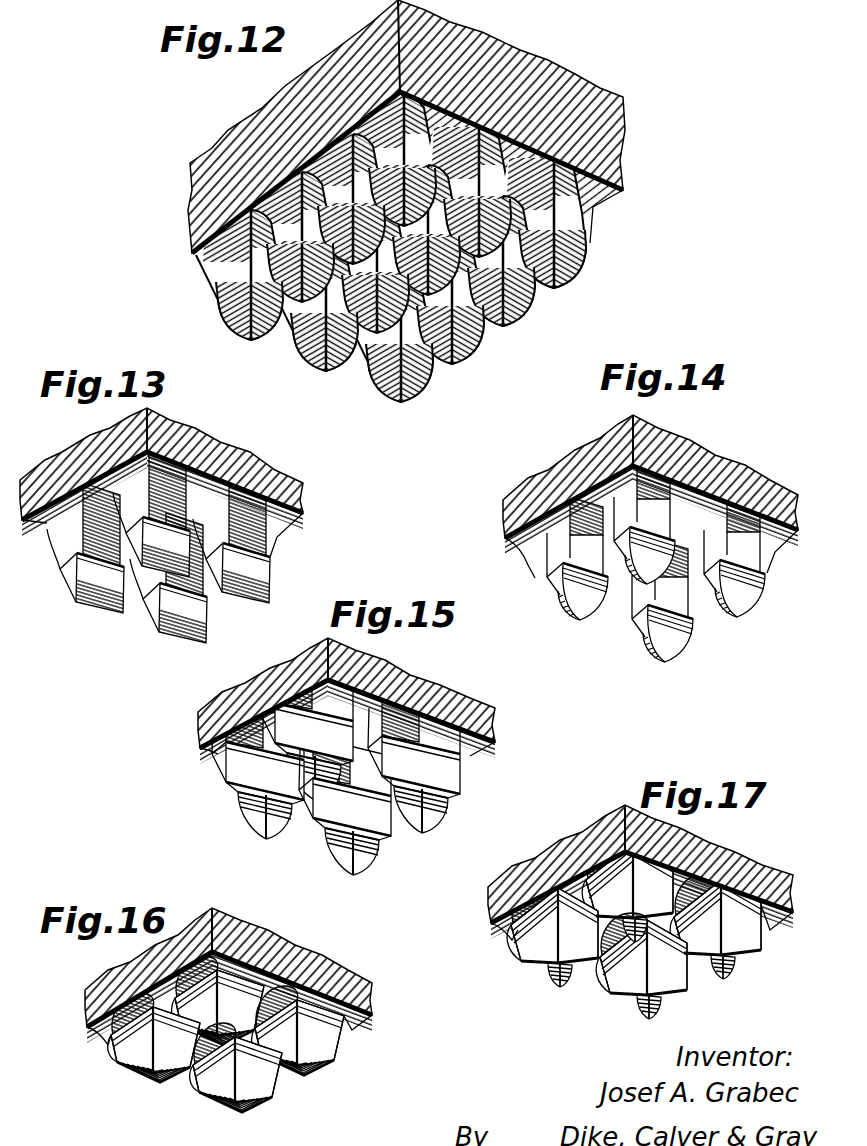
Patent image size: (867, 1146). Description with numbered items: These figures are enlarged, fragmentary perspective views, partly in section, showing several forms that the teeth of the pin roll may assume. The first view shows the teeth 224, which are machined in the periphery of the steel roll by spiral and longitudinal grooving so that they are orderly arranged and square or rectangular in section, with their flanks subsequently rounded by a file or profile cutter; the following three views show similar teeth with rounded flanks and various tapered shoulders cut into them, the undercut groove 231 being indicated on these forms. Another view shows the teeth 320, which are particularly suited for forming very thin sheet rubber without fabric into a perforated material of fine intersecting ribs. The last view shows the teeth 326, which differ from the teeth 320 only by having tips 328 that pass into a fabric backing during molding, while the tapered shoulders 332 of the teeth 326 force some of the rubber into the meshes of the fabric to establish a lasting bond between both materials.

In FIG. 12, the teeth 224 is at (576, 252).
In FIG. 13, the undercut groove 231 is at (248, 556).
In FIG. 14, the undercut groove 231 is at (635, 622).
In FIG. 15, the undercut groove 231 is at (446, 786).
In FIG. 16, the teeth 320 is at (334, 1030).
In FIG. 17, the teeth 326 is at (745, 926).
In FIG. 17, the tips 328 is at (708, 948).
In FIG. 17, the tapered shoulders 332 is at (660, 990).